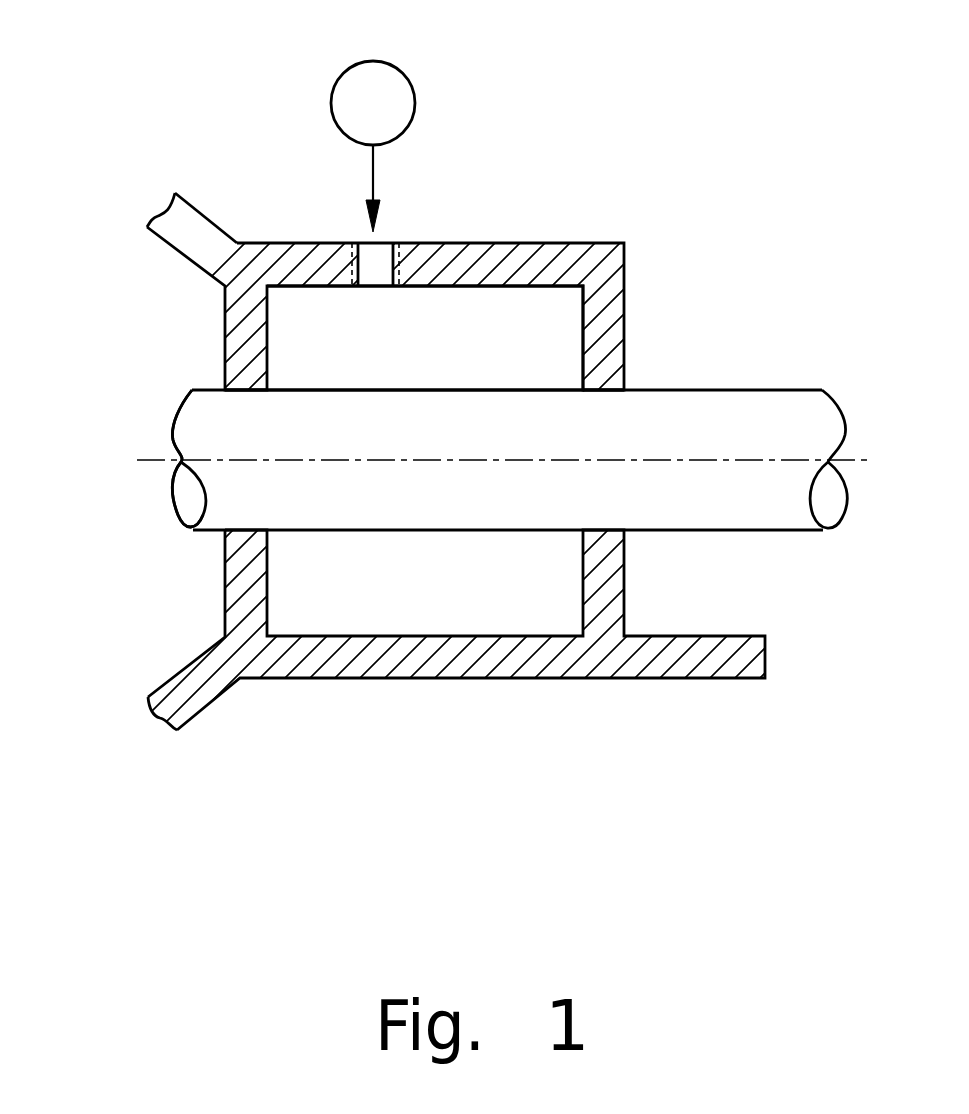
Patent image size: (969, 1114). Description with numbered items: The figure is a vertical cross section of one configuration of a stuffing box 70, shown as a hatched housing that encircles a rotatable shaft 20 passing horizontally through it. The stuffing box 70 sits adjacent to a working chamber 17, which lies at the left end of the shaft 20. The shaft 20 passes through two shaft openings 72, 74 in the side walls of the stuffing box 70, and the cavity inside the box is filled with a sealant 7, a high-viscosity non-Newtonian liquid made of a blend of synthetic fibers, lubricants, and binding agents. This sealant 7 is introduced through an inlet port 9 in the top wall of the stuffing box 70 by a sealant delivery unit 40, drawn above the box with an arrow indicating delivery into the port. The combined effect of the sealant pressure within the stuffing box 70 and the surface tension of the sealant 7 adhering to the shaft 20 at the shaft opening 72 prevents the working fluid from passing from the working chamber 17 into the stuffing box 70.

The sealant 7 is at (302, 307).
The inlet port 9 is at (382, 258).
The working chamber 17 is at (150, 513).
The rotatable shaft 20 is at (803, 428).
The sealant delivery unit 40 is at (390, 83).
The stuffing box 70 is at (430, 585).
The shaft opening 72 is at (233, 388).
The shaft opening 74 is at (602, 387).